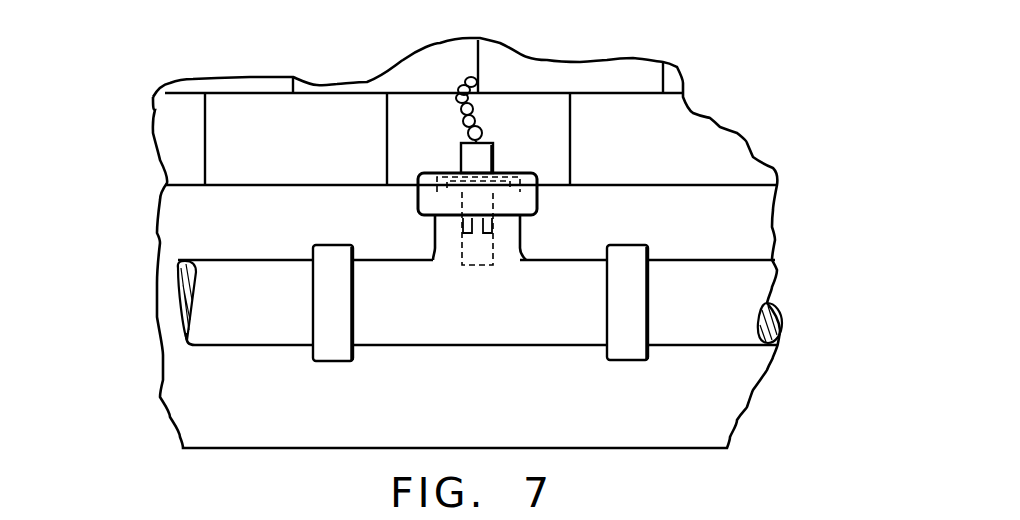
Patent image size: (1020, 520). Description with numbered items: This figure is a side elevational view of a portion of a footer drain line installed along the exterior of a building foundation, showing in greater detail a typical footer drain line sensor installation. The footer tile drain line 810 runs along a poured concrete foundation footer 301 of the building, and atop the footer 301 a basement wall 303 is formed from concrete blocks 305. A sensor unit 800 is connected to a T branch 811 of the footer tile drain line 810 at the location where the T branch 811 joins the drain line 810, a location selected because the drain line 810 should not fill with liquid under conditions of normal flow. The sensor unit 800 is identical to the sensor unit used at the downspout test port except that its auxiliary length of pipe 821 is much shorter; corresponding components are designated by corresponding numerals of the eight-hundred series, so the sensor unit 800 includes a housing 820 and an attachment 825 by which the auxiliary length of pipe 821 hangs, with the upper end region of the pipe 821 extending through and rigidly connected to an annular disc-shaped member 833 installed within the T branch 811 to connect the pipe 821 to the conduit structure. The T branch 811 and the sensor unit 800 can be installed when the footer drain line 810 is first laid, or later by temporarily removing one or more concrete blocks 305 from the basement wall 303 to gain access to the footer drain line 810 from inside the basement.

The poured concrete foundation footer 301 is at (188, 237).
The basement wall 303 is at (738, 133).
The concrete blocks 305 is at (183, 115).
The sensor unit 800 is at (506, 247).
The footer tile drain line 810 is at (765, 277).
The T branch 811 is at (540, 270).
The housing 820 is at (463, 263).
The auxiliary length of pipe 821 is at (495, 160).
The chain 825 is at (475, 125).
The annular disc-shaped member 833 is at (447, 172).